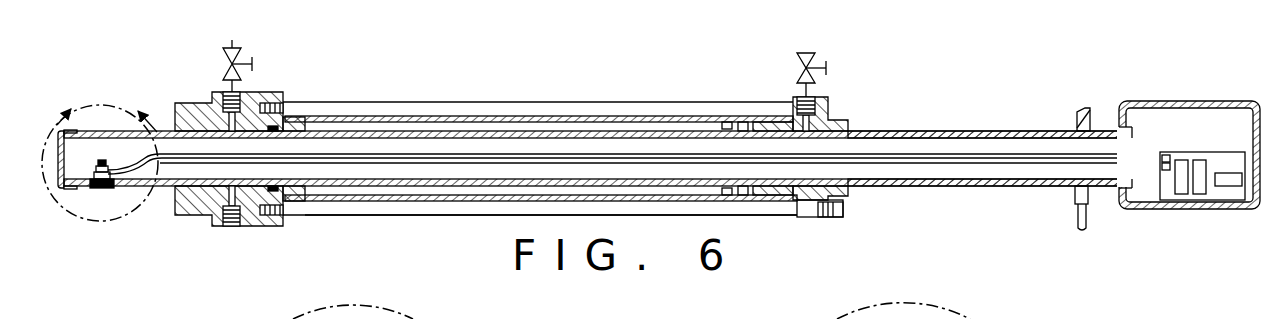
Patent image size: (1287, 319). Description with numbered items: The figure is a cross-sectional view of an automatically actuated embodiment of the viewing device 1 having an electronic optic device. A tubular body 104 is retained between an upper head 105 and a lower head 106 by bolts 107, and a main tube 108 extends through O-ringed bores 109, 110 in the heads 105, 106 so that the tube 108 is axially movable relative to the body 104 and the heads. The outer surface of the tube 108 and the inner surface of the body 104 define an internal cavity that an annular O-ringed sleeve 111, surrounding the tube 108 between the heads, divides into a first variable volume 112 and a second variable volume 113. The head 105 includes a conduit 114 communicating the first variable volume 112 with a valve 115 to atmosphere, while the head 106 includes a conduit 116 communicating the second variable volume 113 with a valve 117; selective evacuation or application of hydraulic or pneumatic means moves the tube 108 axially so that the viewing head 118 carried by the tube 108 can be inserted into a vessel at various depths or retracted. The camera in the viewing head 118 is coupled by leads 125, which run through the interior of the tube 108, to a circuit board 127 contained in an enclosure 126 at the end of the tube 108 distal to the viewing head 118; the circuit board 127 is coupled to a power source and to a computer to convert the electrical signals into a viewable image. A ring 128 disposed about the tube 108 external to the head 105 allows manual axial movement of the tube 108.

The viewing device 1 is at (652, 139).
The tubular body 104 is at (450, 117).
The upper head 105 is at (848, 190).
The lower head 106 is at (178, 216).
The bolts 107 is at (380, 209).
The main tube 108 is at (945, 129).
The O-ringed bore 109 is at (830, 105).
The O-ringed bore 110 is at (274, 126).
The annular O-ringed sleeve 111 is at (733, 122).
The first variable volume 112 is at (767, 202).
The second variable volume 113 is at (655, 127).
The conduit 114 is at (798, 100).
The valve 115 is at (806, 52).
The conduit 116 is at (226, 92).
The valve 117 is at (232, 40).
The viewing head 118 is at (125, 66).
The leads 125 is at (1005, 156).
The enclosure 126 is at (1185, 101).
The circuit board 127 is at (1232, 162).
The ring 128 is at (1075, 118).